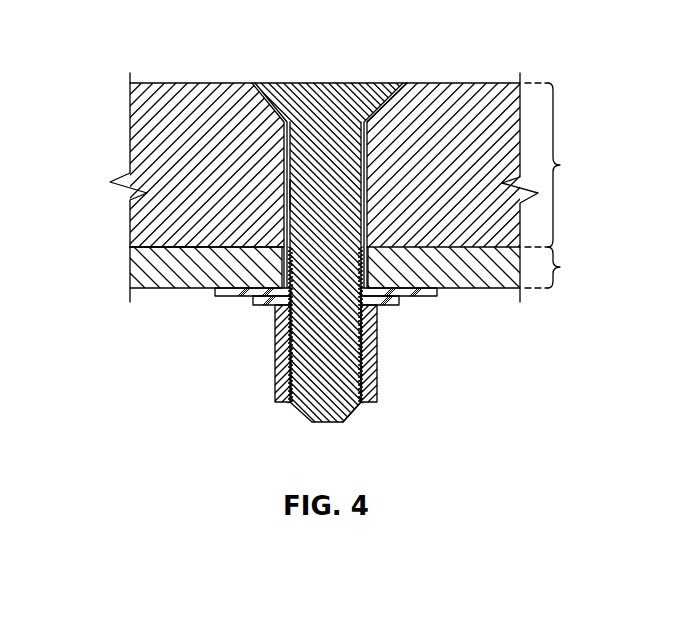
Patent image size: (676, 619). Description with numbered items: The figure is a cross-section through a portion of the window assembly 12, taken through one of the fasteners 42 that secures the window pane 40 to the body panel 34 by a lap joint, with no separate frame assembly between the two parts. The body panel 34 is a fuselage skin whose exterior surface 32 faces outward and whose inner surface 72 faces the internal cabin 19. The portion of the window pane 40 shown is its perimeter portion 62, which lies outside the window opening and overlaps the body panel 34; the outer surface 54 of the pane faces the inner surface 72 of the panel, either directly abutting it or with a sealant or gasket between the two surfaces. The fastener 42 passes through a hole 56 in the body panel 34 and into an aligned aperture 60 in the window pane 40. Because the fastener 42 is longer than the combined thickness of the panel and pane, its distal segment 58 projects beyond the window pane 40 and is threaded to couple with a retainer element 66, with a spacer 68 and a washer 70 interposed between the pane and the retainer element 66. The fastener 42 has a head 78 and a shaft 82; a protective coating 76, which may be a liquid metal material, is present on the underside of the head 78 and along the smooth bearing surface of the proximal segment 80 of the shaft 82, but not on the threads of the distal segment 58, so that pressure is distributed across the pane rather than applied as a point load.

The window assembly 12 is at (90, 85).
The exterior surface 32 is at (170, 83).
The body panel 34 is at (361, 187).
The window pane 40 is at (371, 267).
The fastener 42 is at (312, 93).
The head 78 is at (277, 97).
The protective coating 76 is at (368, 120).
The hole 56 is at (368, 140).
The proximal segment 80 is at (335, 195).
The aperture 60 is at (279, 266).
The outer surface 54 is at (182, 246).
The inner surface 72 is at (160, 248).
The perimeter portion 62 is at (150, 291).
The washer 70 is at (228, 297).
The spacer 68 is at (269, 307).
The retainer element 66 is at (372, 351).
The internal cabin 19 is at (177, 402).
The distal segment 58 is at (320, 403).
The shaft 82 is at (343, 408).